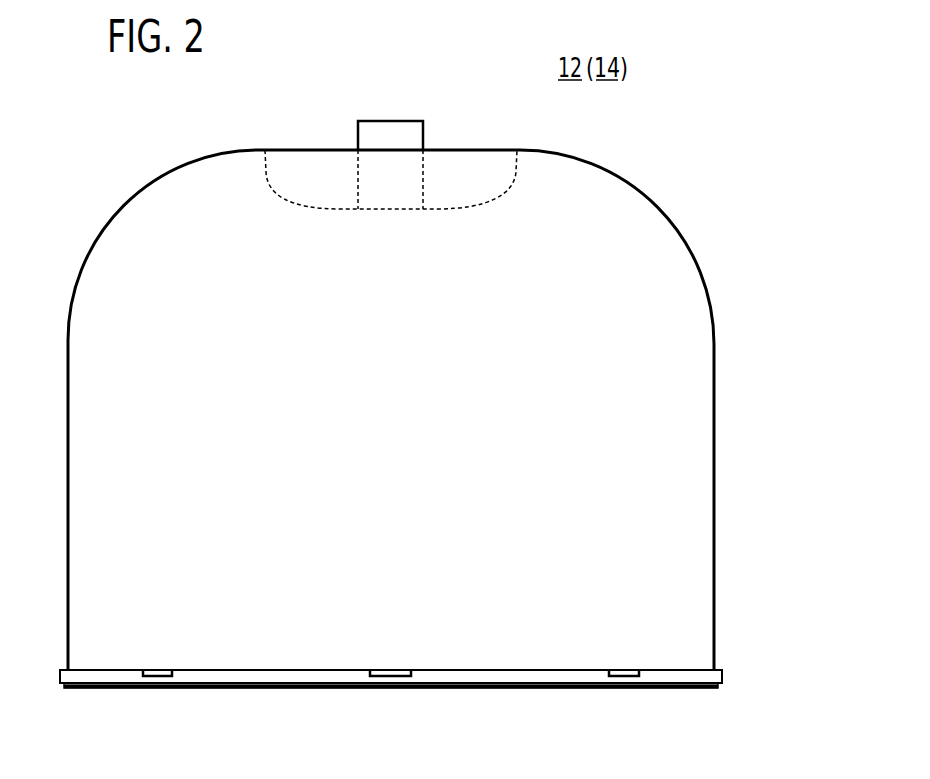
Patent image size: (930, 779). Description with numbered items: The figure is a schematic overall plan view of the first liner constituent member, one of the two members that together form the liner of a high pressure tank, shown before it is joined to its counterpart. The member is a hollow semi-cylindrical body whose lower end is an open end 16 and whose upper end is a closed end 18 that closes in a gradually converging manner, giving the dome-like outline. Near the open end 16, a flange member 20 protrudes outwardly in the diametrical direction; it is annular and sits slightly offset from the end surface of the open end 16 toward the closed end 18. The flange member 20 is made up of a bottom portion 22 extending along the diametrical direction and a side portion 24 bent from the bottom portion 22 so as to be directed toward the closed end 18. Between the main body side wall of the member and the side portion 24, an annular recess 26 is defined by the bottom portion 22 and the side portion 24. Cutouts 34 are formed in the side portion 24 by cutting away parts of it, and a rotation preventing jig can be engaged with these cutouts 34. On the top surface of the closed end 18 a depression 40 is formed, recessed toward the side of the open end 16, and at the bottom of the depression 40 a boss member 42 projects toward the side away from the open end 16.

The open end 16 is at (521, 689).
The closed end 18 is at (163, 179).
The flange member 20 is at (287, 676).
The bottom portion 22 is at (447, 684).
The side portion 24 is at (208, 677).
The annular recess 26 is at (100, 668).
The cutouts 34 is at (162, 670).
The depression 40 is at (271, 173).
The boss member 42 is at (392, 133).